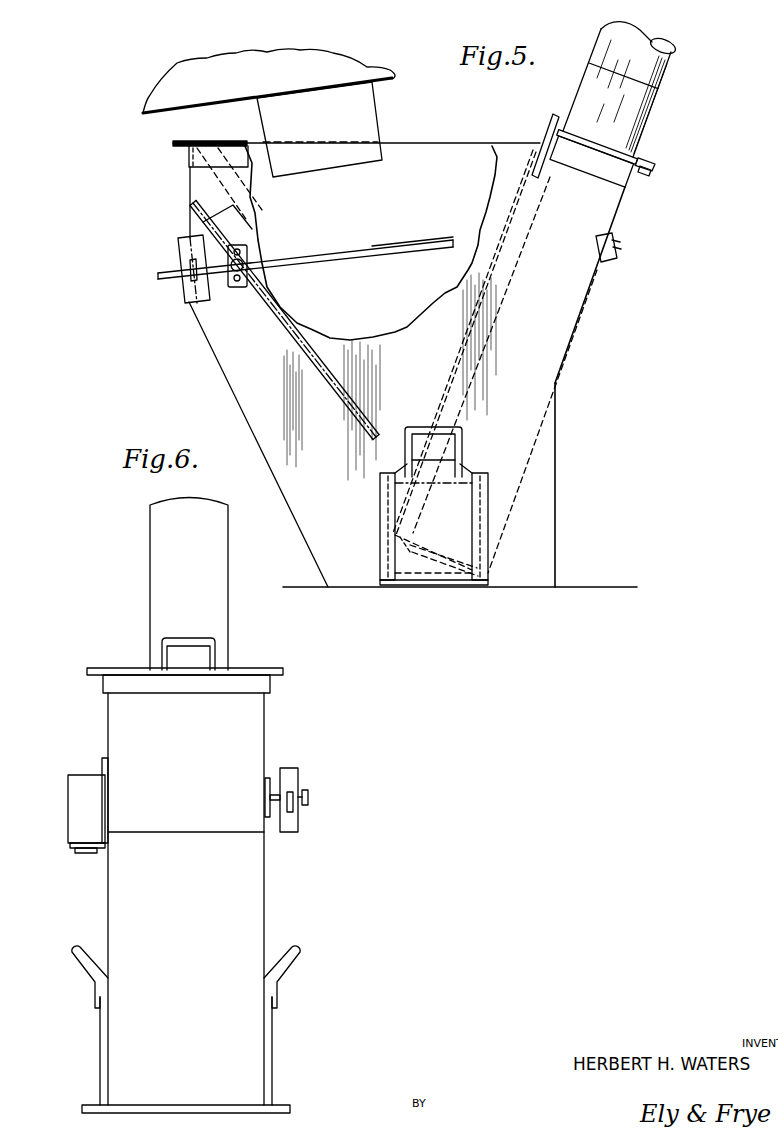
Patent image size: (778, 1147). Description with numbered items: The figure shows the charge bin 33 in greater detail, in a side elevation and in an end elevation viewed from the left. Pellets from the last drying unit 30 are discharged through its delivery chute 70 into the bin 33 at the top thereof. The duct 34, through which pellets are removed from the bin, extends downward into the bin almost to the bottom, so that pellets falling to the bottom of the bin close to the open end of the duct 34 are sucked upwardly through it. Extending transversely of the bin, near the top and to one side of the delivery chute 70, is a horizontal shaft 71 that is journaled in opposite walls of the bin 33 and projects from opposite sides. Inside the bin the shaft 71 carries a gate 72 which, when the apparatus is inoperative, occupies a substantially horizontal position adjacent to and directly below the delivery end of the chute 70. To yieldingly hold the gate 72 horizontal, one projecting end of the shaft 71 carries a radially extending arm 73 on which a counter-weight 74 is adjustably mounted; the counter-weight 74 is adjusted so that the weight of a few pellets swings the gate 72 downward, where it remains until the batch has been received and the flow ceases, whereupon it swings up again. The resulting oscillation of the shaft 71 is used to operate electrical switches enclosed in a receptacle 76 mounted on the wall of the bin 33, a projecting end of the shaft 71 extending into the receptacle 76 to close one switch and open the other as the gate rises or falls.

In FIG. 5, the last drying unit 30 is at (168, 93).
In FIG. 5, the delivery chute 70 is at (367, 113).
In FIG. 5, the duct 34 is at (647, 123).
In FIG. 6, the duct 34 is at (218, 613).
In FIG. 5, the gate 72 is at (331, 253).
In FIG. 5, the arm 73 is at (158, 276).
In FIG. 6, the arm 73 is at (295, 810).
In FIG. 5, the counter-weight 74 is at (183, 300).
In FIG. 6, the counter-weight 74 is at (298, 772).
In FIG. 5, the horizontal shaft 71 is at (227, 286).
In FIG. 6, the horizontal shaft 71 is at (272, 783).
In FIG. 5, the charge bin 33 is at (222, 377).
In FIG. 6, the charge bin 33 is at (274, 904).
In FIG. 6, the receptacle 76 is at (76, 775).